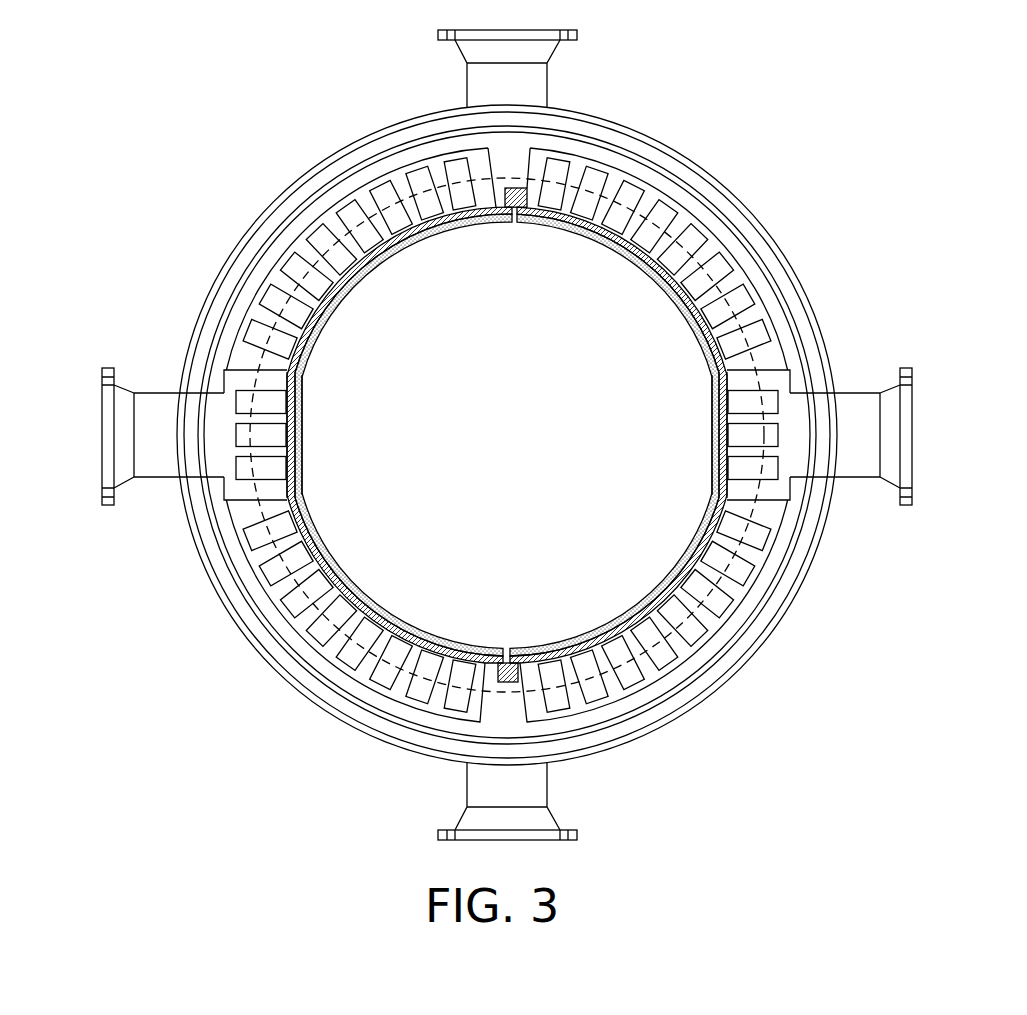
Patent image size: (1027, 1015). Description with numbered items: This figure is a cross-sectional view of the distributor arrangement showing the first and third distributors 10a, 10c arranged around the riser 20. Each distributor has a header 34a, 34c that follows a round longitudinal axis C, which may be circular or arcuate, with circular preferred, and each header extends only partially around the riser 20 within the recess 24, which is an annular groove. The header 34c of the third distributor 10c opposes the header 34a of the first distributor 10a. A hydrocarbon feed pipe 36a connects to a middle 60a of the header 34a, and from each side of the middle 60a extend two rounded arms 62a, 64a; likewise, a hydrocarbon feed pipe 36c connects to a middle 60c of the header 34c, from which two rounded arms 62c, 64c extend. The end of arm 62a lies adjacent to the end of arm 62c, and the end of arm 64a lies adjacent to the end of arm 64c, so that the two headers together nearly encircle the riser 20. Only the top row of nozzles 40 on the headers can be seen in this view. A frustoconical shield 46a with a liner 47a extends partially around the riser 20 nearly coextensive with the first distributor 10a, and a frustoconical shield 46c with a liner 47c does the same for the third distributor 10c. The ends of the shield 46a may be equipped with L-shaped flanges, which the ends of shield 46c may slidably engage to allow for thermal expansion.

The first distributor 10a is at (865, 425).
The third distributor 10c is at (139, 417).
The riser 20 is at (632, 740).
The recess 24 is at (640, 149).
The header 34a is at (704, 440).
The header 34c is at (319, 426).
The hydrocarbon feed pipe 36a is at (858, 478).
The hydrocarbon feed pipe 36c is at (150, 478).
The nozzles 40 is at (543, 222).
The frustoconical shield 46a is at (710, 370).
The frustoconical shield 46c is at (297, 368).
The liner 47a is at (715, 505).
The liner 47c is at (332, 568).
The middle 60a is at (792, 365).
The middle 60c is at (230, 363).
The rounded arm 62a is at (653, 203).
The rounded arm 62c is at (380, 190).
The rounded arm 64a is at (683, 650).
The rounded arm 64c is at (360, 670).
The round longitudinal axis C is at (670, 235).